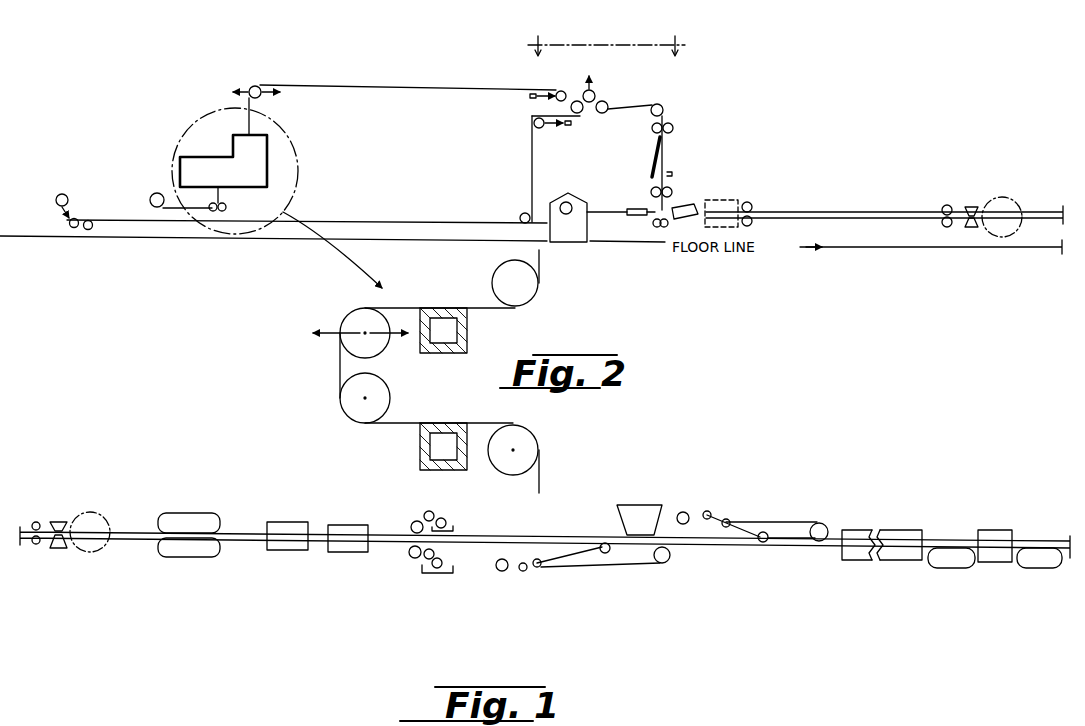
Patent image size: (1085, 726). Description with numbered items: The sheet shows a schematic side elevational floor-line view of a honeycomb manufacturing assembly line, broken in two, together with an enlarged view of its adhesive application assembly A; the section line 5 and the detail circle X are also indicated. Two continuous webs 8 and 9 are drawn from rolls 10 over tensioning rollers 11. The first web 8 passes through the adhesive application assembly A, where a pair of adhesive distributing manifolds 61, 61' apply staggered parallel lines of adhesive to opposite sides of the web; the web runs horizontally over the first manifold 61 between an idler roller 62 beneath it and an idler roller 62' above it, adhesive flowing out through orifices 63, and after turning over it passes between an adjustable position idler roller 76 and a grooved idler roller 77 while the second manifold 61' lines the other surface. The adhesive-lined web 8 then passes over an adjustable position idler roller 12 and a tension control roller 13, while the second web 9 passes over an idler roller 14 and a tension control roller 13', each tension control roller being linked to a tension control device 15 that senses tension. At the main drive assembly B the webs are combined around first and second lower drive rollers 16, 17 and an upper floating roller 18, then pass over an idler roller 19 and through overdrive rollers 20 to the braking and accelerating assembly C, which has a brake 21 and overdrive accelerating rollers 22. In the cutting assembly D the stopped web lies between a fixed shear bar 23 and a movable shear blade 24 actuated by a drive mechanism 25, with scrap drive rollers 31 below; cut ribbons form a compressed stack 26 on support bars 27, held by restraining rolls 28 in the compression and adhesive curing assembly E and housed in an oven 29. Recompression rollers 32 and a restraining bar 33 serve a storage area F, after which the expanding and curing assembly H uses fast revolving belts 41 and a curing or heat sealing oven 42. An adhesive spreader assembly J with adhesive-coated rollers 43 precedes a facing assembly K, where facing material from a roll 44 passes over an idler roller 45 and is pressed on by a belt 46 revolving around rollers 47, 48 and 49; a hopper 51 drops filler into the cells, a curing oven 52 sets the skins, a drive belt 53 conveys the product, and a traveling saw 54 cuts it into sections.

In FIG. 2, the section line 5- 5 is at (606, 36).
In FIG. 2, the first continuous web 8 is at (190, 209).
In FIG. 2, the second continuous web 9 is at (320, 217).
In FIG. 2, the rolls 10 is at (78, 186).
In FIG. 2, the tensioning rollers 11 is at (76, 237).
In FIG. 2, the adjustable position idler roller 12 is at (262, 86).
In FIG. 2, the tension control roller 13 is at (563, 79).
In FIG. 2, the tension control roller 13' is at (521, 130).
In FIG. 2, the idler roller 14 is at (523, 212).
In FIG. 2, the tension control device 15 is at (528, 96).
In FIG. 2, the first lower drive roller 16 is at (578, 114).
In FIG. 2, the second lower drive roller 17 is at (604, 114).
In FIG. 2, the upper floating roller 18 is at (595, 92).
In FIG. 2, the idler roller 19 is at (664, 104).
In FIG. 2, the overdrive rollers 20 is at (675, 127).
In FIG. 2, the brake 21 is at (666, 160).
In FIG. 2, the overdrive accelerating rollers 22 is at (652, 189).
In FIG. 2, the fixed shear bar 23 is at (672, 190).
In FIG. 2, the movable shear blade 24 is at (630, 208).
In FIG. 2, the drive mechanism 25 is at (572, 204).
In FIG. 2, the compressed stack 26 is at (693, 216).
In FIG. 2, the support bars 27 is at (670, 226).
In FIG. 2, the restraining rolls 28 is at (753, 205).
In FIG. 2, the oven 29 is at (716, 199).
In FIG. 2, the scrap drive rollers 31 is at (660, 233).
In FIG. 2, the recompression rollers 32 is at (960, 194).
In FIG. 1, the recompression rollers 32 is at (43, 520).
In FIG. 2, the restraining bar 33 is at (972, 230).
In FIG. 1, the restraining bar 33 is at (53, 546).
In FIG. 1, the fast revolving belts 41 is at (180, 512).
In FIG. 1, the curing or heat sealing oven 42 is at (285, 552).
In FIG. 1, the adhesive-coated rollers 43 is at (412, 520).
In FIG. 1, the roll 44 is at (500, 572).
In FIG. 1, the idler roller 45 is at (521, 572).
In FIG. 1, the belt 46 is at (583, 568).
In FIG. 1, the roller 47 is at (540, 568).
In FIG. 1, the roller 48 is at (610, 549).
In FIG. 1, the roller 49 is at (668, 561).
In FIG. 1, the hopper 51 is at (640, 512).
In FIG. 1, the curing oven 52 is at (888, 530).
In FIG. 1, the drive belt 53 is at (940, 568).
In FIG. 1, the traveling saw 54 is at (995, 530).
In FIG. 2, the adhesive distributing manifold 61 is at (422, 446).
In FIG. 2, the second adhesive distributing manifold 61' is at (466, 330).
In FIG. 2, the idler roller 62 is at (526, 445).
In FIG. 2, the idler roller 62' is at (387, 398).
In FIG. 2, the orifices 63 is at (430, 423).
In FIG. 2, the adjustable position idler roller 76 is at (376, 347).
In FIG. 2, the idler roller 77 is at (497, 270).
In FIG. 2, the adhesive application assembly A is at (299, 170).
In FIG. 2, the main drive assembly B is at (620, 102).
In FIG. 2, the braking and accelerating assembly C is at (679, 174).
In FIG. 2, the cutting assembly D is at (637, 226).
In FIG. 2, the compression and adhesive curing assembly E is at (737, 230).
In FIG. 2, the storage area F is at (851, 208).
In FIG. 1, the expanding and curing assembly H is at (277, 513).
In FIG. 1, the adhesive spreader assembly J is at (461, 527).
In FIG. 1, the facing assembly K is at (641, 575).
In FIG. 2, the detail X is at (995, 192).
In FIG. 1, the detail X is at (87, 503).